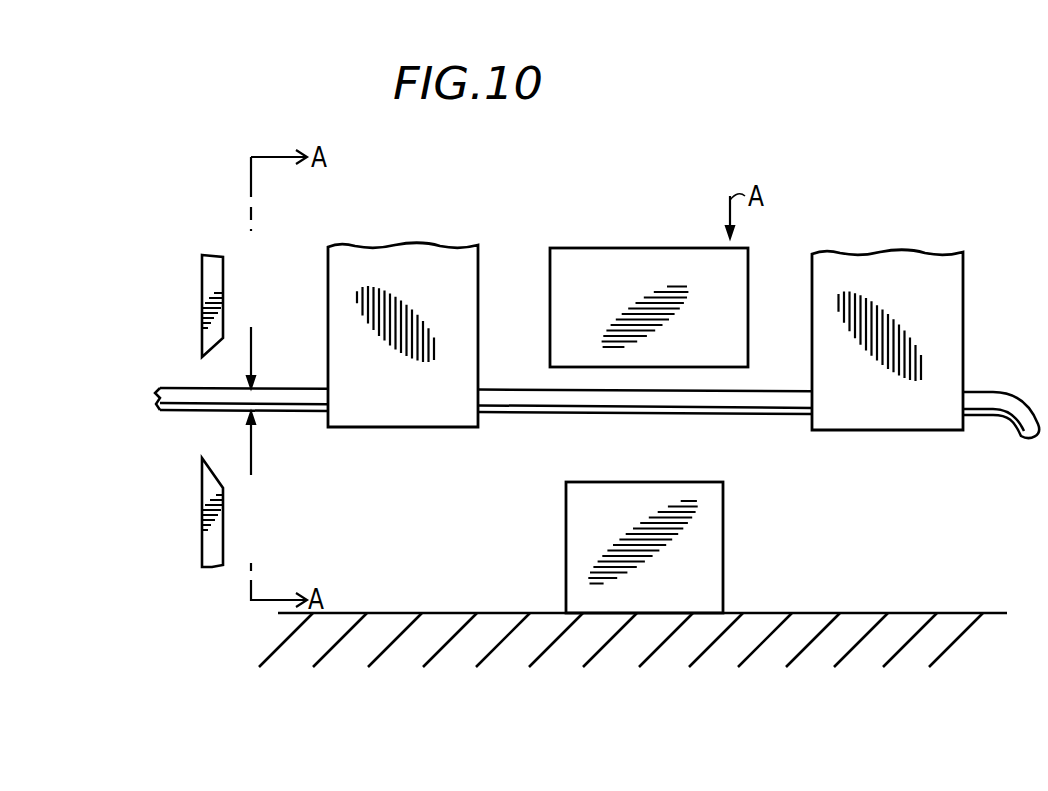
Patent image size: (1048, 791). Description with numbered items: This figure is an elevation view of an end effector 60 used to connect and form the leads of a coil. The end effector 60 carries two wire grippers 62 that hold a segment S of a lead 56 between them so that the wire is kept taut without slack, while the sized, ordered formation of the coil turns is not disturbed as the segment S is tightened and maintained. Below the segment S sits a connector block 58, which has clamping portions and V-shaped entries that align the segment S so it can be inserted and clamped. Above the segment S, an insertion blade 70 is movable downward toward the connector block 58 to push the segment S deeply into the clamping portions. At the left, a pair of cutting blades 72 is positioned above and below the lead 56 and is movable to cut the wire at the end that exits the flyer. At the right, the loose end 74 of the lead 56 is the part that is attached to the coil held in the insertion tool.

The lead 56 is at (175, 400).
The connector block 58 is at (705, 560).
The end effector 60 is at (678, 198).
The wire grippers 62 is at (352, 258).
The insertion blade 70 is at (592, 265).
The cutting blades 72 is at (205, 283).
The loose end 74 is at (1005, 400).
The segment S is at (748, 399).